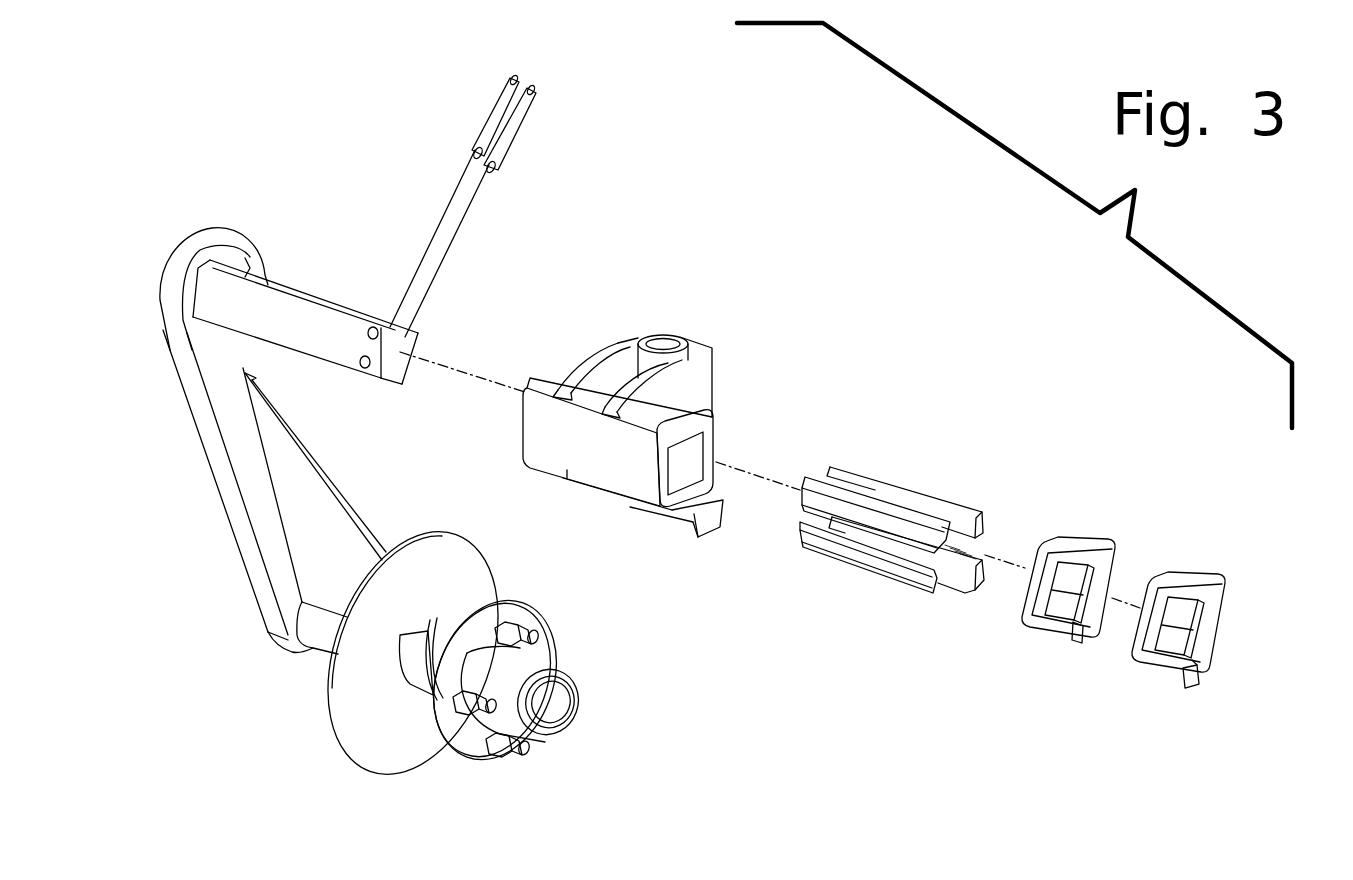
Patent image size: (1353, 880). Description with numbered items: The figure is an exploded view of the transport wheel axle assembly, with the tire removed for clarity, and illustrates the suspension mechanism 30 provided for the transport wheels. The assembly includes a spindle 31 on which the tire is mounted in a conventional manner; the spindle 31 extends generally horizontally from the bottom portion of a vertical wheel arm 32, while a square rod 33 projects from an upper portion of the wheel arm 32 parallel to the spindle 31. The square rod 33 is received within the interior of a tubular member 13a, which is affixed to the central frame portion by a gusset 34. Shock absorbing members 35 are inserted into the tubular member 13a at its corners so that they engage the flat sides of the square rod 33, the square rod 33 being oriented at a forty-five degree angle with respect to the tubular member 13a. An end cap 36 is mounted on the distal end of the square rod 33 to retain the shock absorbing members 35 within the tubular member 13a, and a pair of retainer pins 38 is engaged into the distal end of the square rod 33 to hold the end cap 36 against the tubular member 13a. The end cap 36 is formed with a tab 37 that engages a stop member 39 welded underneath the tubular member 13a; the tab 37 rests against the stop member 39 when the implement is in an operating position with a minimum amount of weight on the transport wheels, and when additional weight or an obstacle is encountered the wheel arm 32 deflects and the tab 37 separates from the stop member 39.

The suspension mechanism 30 is at (866, 304).
The spindle 31 is at (318, 637).
The wheel arm 32 is at (246, 549).
The square rod 33 is at (334, 317).
The gusset 34 is at (643, 328).
The tubular member 13a is at (703, 450).
The shock absorbing members 35 is at (942, 535).
The end cap 36 is at (1183, 592).
The tab 37 is at (1203, 677).
The retainer pins 38 is at (498, 120).
The stop member 39 is at (686, 526).